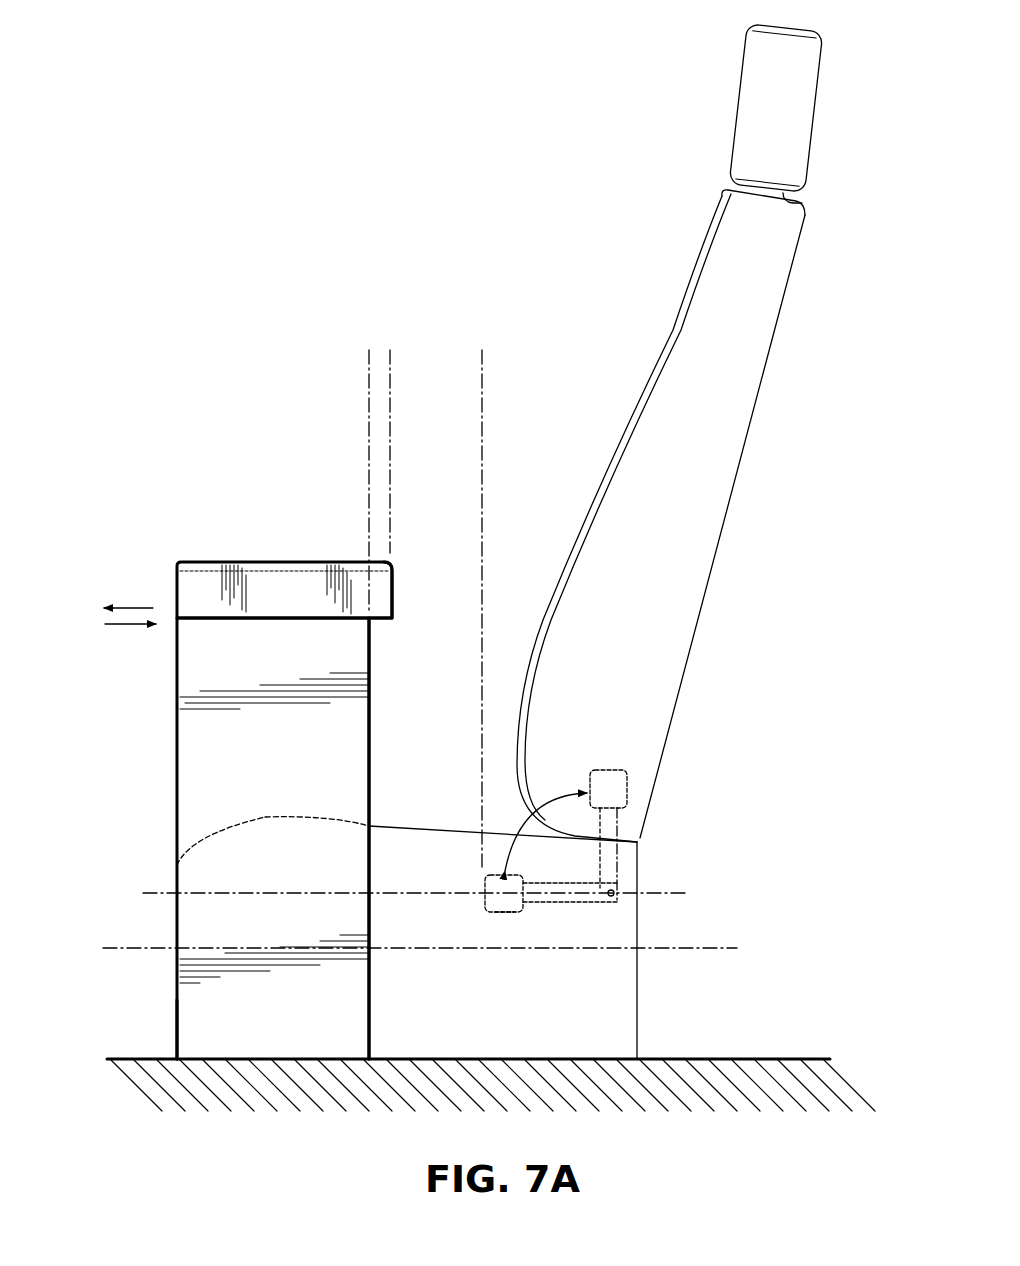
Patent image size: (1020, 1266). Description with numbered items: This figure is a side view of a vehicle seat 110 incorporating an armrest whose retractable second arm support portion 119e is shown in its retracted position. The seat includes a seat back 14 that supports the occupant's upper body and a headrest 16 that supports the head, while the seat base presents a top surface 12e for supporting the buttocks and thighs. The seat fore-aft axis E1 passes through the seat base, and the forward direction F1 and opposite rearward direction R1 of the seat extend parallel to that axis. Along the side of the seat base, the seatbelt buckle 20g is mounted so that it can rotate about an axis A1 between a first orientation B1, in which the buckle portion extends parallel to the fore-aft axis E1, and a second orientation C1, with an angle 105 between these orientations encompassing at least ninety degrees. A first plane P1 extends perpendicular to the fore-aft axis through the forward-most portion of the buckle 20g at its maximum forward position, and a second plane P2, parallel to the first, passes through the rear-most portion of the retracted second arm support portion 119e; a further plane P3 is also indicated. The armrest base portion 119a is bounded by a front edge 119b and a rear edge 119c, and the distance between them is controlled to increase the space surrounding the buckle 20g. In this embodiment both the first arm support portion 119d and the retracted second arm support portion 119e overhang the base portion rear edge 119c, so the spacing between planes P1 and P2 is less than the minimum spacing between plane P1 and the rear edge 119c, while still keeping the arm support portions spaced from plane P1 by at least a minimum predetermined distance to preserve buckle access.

The vehicle seat 110 is at (235, 208).
The headrest 16 is at (797, 100).
The seat back 14 is at (760, 250).
The third plane P3 is at (369, 447).
The second plane P2 is at (390, 421).
The first plane P1 is at (482, 421).
The first arm support portion 119d is at (200, 567).
The retractable second arm support portion 119e is at (392, 580).
The forward direction F1 is at (127, 608).
The rearward direction R1 is at (133, 624).
The rear edge of armrest base portion 119c is at (369, 645).
The armrest base portion 119a is at (182, 738).
The front edge of armrest base portion 119b is at (177, 1040).
The top surface of seat base 12e is at (400, 826).
The angle 105 is at (513, 850).
The second orientation C1 is at (627, 790).
The first orientation B1 is at (495, 912).
The buckle 20g is at (507, 912).
The axis A1 is at (613, 896).
The fore-aft axis of the seat E1 is at (712, 948).